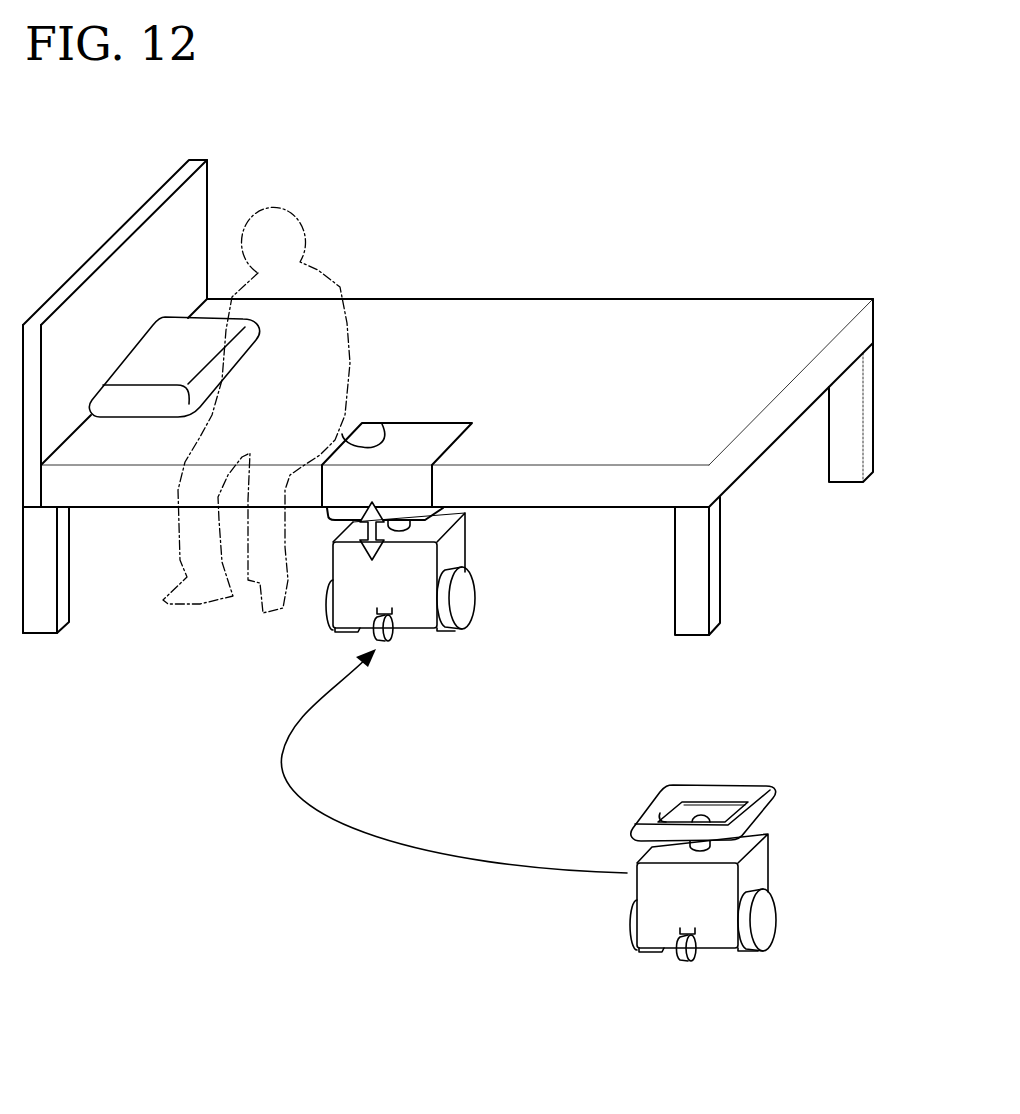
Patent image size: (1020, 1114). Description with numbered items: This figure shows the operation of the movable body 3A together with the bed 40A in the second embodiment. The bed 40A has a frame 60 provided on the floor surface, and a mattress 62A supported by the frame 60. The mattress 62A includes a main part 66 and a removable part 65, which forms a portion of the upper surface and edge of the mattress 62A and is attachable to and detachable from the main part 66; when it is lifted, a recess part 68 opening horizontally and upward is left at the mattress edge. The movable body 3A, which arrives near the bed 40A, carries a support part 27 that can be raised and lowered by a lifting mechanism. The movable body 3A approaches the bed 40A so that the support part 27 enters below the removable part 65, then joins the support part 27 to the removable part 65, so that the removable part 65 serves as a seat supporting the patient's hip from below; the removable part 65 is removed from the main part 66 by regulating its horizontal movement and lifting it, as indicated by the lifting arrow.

The bed 40A is at (783, 214).
The mattress 62A is at (643, 300).
The main part 66 is at (482, 328).
The frame 60 is at (63, 568).
The removable part 65 is at (422, 435).
The recess part 68 is at (383, 430).
The support part 27 is at (712, 790).
The movable body 3A is at (811, 822).